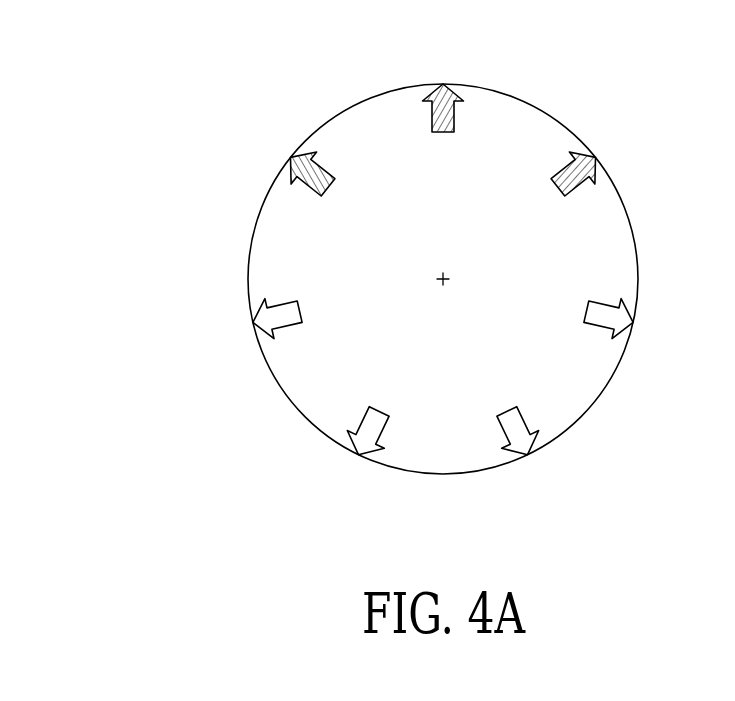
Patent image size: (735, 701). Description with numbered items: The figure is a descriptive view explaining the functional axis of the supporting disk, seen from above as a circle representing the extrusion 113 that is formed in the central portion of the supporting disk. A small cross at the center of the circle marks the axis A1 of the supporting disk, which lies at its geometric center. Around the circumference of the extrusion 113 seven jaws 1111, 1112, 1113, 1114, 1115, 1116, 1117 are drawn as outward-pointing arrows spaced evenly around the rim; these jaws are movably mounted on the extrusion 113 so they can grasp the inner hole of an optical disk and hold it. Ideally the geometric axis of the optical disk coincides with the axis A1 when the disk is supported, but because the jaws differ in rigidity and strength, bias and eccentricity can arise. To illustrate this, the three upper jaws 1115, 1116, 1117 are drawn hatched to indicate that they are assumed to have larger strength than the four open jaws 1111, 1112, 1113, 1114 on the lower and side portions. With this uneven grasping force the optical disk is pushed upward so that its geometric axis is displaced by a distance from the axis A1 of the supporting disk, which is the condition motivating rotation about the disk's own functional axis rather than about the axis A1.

The extrusion 113 is at (583, 393).
The axis of the supporting disk A1 is at (440, 279).
The jaw 1111 is at (636, 323).
The jaw 1112 is at (533, 452).
The jaw 1113 is at (357, 452).
The jaw 1114 is at (256, 318).
The jaw 1115 is at (290, 170).
The jaw 1116 is at (441, 86).
The jaw 1117 is at (598, 163).